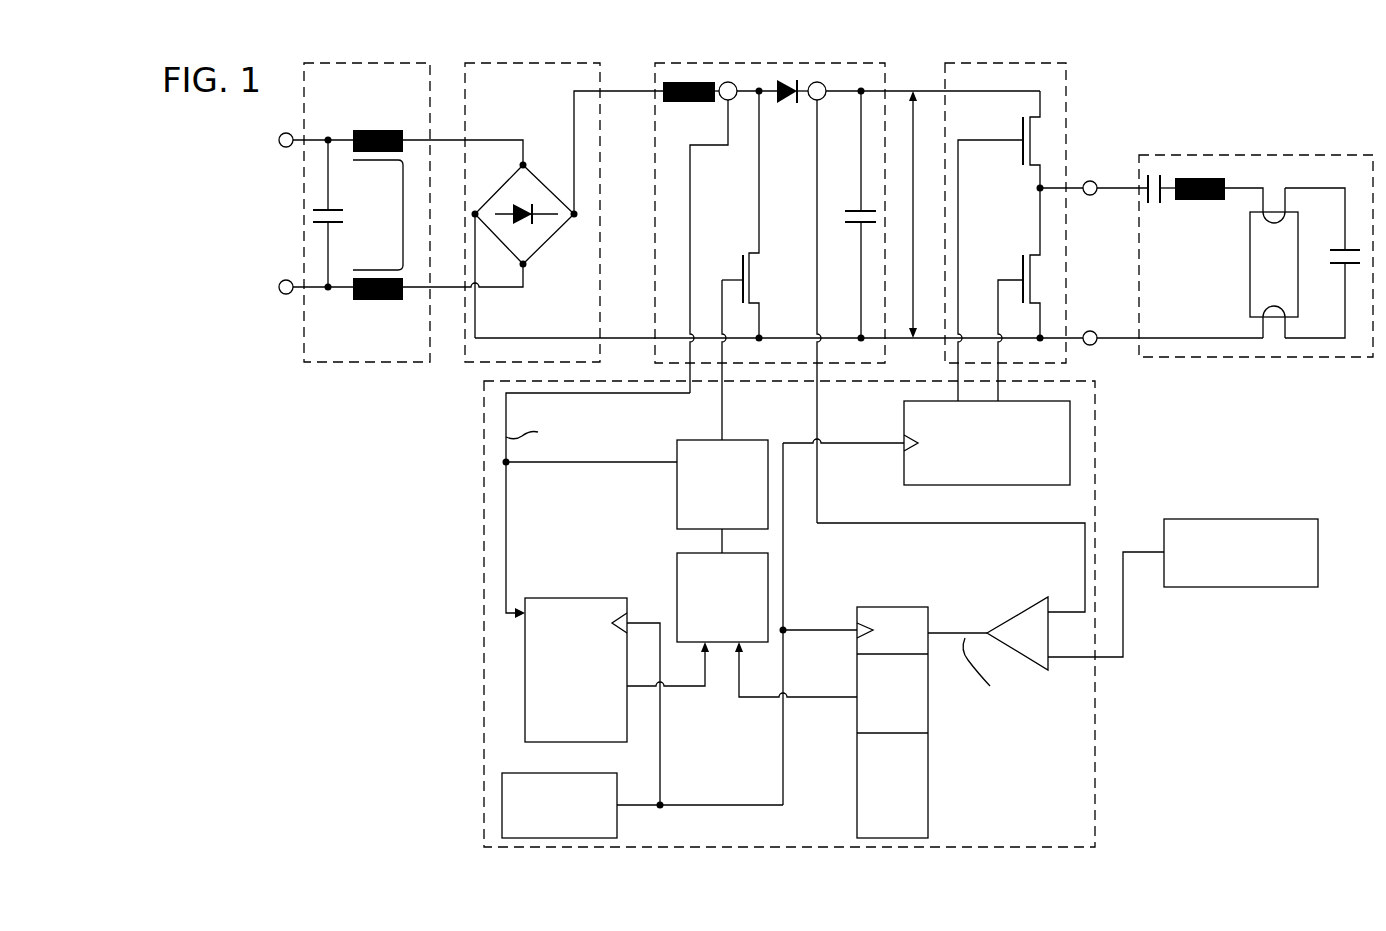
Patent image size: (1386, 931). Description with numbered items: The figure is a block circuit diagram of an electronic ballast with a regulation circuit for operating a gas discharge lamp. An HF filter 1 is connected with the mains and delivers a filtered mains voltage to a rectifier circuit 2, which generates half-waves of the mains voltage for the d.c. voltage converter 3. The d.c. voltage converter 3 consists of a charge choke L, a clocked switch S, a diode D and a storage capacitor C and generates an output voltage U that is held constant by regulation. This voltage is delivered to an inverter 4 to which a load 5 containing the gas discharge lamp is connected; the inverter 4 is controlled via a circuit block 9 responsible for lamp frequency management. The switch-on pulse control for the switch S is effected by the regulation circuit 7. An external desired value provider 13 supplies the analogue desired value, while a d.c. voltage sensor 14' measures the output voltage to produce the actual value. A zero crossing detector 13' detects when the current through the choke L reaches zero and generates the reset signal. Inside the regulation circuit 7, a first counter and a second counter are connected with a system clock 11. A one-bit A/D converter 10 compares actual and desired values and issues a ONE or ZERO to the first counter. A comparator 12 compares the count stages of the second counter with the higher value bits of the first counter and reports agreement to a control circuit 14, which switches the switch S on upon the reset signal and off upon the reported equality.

The HF filter 1 is at (378, 362).
The rectifier circuit 2 is at (600, 83).
The d.c. voltage converter 3 is at (887, 83).
The inverter 4 is at (1068, 85).
The load 5 is at (1270, 155).
The regulation circuit 7 is at (824, 610).
The circuit block for lamp frequency management 9 is at (1070, 418).
The 1-bit A/D converter 10 is at (1022, 610).
The system clock 11 is at (617, 817).
The comparator 12 is at (677, 583).
The desired value provider 13 is at (1249, 550).
The zero crossing detector 13' is at (750, 61).
The control circuit 14 is at (730, 458).
The d.c. voltage sensor 14' is at (835, 61).